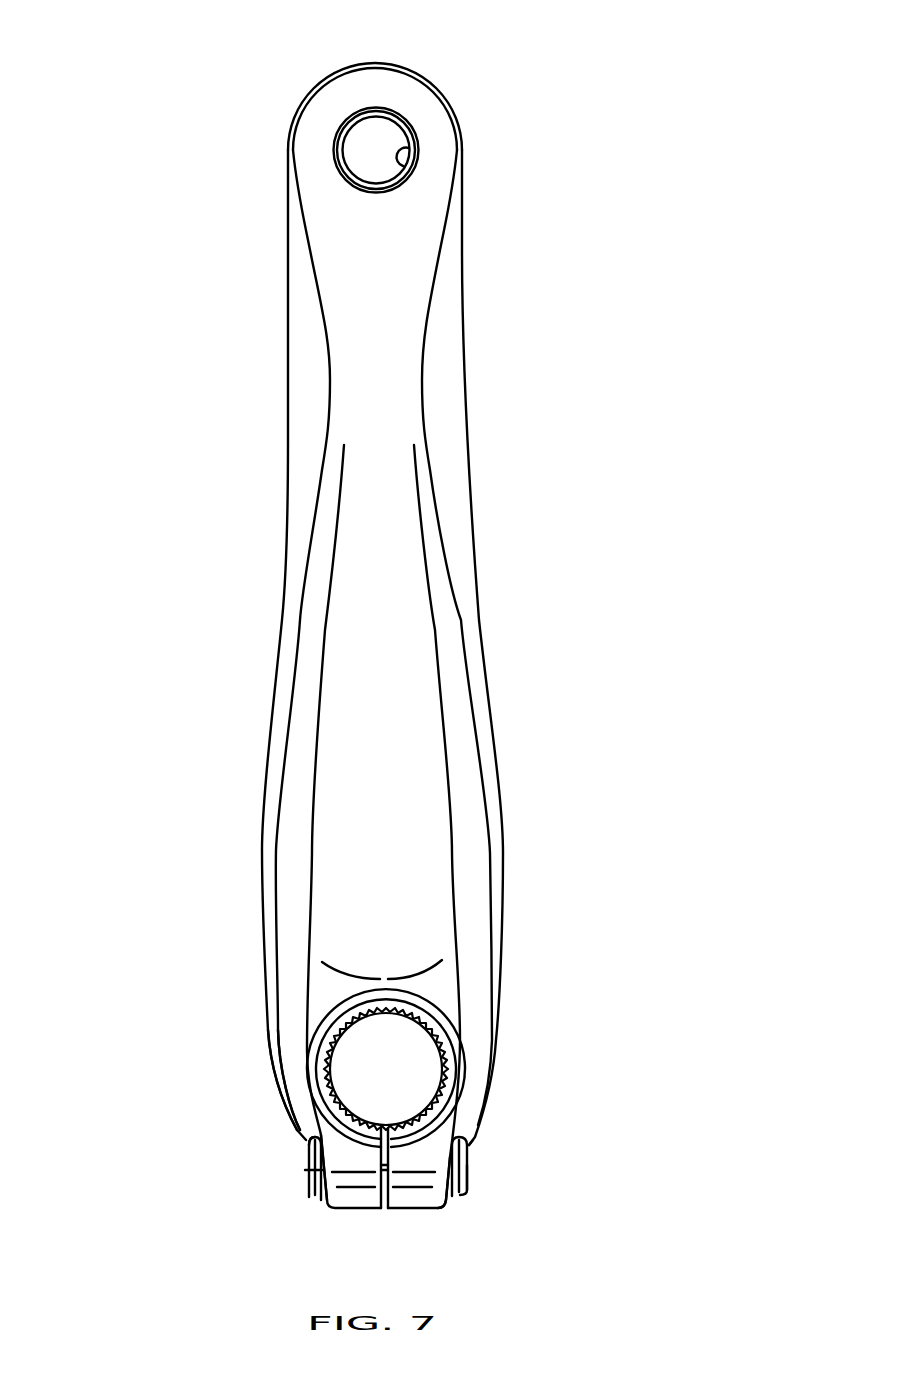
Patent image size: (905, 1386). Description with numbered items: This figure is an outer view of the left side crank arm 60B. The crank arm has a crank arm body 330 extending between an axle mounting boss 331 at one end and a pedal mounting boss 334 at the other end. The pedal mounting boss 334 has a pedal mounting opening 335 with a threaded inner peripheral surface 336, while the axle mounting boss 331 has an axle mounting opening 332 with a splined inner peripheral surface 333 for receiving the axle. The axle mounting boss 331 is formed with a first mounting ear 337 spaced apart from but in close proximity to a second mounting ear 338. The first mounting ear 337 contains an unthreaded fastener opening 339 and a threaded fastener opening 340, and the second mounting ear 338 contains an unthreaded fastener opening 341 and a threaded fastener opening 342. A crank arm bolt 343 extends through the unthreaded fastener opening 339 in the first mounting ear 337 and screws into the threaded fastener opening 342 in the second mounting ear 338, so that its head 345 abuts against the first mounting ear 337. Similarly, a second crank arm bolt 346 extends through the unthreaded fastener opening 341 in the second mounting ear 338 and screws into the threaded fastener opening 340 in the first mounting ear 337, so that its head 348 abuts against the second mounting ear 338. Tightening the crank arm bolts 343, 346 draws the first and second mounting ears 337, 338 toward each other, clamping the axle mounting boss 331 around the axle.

The left side crank arm 60B is at (160, 525).
The crank arm body 330 is at (303, 647).
The axle mounting boss 331 is at (275, 1073).
The axle mounting opening 332 is at (437, 1013).
The splined inner peripheral surface 333 is at (438, 1066).
The pedal mounting boss 334 is at (320, 122).
The pedal mounting opening 335 is at (367, 110).
The threaded inner peripheral surface 336 is at (410, 158).
The first mounting ear 337 is at (353, 1202).
The second mounting ear 338 is at (414, 1200).
The unthreaded fastener opening 339 is at (304, 1143).
The threaded fastener opening 340 is at (313, 1183).
The unthreaded fastener opening 341 is at (462, 1200).
The threaded fastener opening 342 is at (473, 1140).
The crank arm bolt 343 is at (278, 1153).
The head 345 is at (305, 1171).
The crank arm bolt 346 is at (485, 1188).
The head 348 is at (467, 1162).